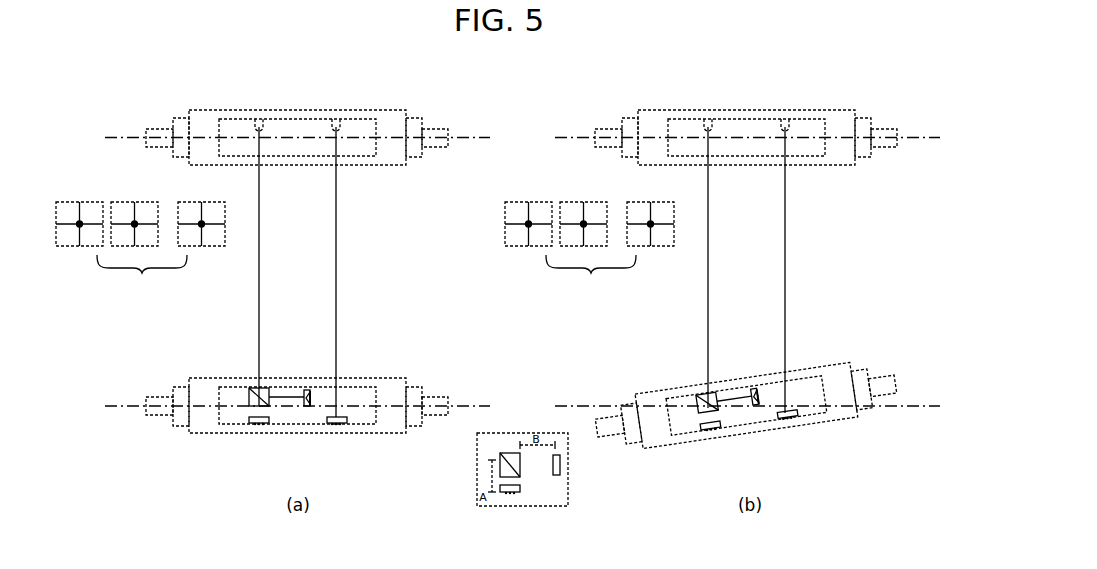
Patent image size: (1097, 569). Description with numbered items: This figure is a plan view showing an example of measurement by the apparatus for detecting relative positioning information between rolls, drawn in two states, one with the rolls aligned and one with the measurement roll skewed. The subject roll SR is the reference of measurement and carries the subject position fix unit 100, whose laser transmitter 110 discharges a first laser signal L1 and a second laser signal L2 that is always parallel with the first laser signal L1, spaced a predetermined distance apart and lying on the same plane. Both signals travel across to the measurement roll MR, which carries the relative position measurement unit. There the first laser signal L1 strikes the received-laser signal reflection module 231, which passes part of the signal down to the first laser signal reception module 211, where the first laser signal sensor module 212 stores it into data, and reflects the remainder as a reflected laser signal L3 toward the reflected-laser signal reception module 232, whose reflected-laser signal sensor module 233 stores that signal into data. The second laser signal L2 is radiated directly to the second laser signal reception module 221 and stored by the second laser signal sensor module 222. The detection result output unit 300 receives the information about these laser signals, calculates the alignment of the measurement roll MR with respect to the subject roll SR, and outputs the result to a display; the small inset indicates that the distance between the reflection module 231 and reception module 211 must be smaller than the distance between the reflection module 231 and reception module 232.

The subject position fix unit 100 is at (357, 112).
The laser transmitter 110 is at (336, 102).
The subject roll SR is at (396, 115).
The measurement roll MR is at (392, 385).
The first laser signal L1 is at (708, 304).
The second laser signal L2 is at (831, 296).
The reflected laser signal L3 is at (730, 388).
The detection result output unit 300 is at (366, 277).
The received-laser signal reflection module 231 is at (253, 388).
The reflected-laser signal reception module 232 is at (305, 390).
The reflected-laser signal sensor module 233 is at (311, 406).
The first laser signal reception module 211 is at (249, 418).
The first laser signal sensor module 212 is at (258, 425).
The second laser signal reception module 221 is at (347, 418).
The second laser signal sensor module 222 is at (337, 425).